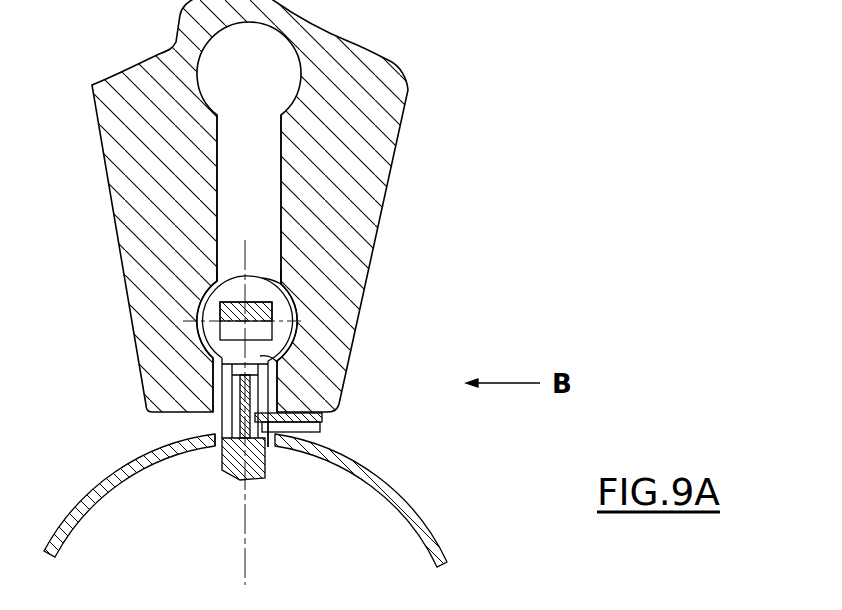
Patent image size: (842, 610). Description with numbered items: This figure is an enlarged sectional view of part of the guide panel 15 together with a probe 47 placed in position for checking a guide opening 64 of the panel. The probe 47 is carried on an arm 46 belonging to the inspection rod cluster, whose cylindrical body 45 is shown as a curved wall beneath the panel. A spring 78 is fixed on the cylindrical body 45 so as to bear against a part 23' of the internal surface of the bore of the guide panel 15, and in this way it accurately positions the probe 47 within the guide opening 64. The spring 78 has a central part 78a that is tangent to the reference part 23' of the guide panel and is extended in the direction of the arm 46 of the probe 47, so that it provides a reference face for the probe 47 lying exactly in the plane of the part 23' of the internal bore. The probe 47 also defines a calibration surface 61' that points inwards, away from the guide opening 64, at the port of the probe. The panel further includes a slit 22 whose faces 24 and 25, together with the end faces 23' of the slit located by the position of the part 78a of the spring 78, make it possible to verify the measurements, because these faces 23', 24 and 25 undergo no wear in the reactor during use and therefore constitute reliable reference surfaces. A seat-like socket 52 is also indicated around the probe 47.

The guide panel 15 is at (397, 110).
The slit 22 is at (263, 165).
The ball socket 52 is at (207, 292).
The probe 47 is at (285, 286).
The guide opening 64 is at (295, 302).
The calibration surface 61' is at (342, 336).
The face of the slit 25 is at (281, 386).
The face of the slit 24 is at (208, 382).
The arm of the probe 46 is at (233, 463).
The spring 78 is at (322, 420).
The central part of the spring 78a is at (275, 450).
The part of the internal surface of the bore 23' is at (250, 419).
The cylindrical body 45 is at (432, 543).